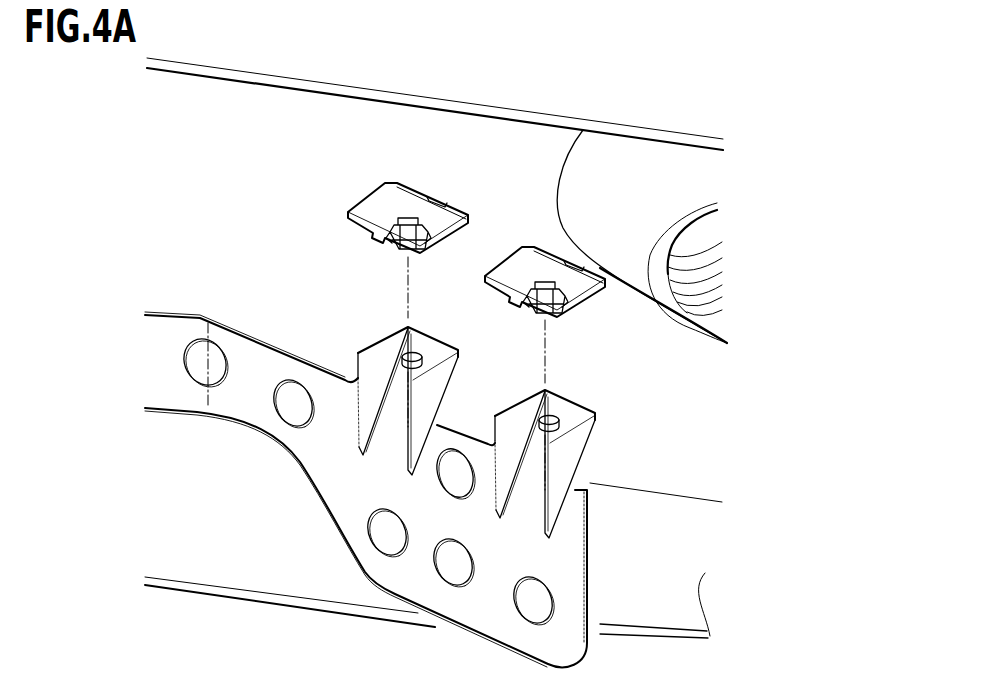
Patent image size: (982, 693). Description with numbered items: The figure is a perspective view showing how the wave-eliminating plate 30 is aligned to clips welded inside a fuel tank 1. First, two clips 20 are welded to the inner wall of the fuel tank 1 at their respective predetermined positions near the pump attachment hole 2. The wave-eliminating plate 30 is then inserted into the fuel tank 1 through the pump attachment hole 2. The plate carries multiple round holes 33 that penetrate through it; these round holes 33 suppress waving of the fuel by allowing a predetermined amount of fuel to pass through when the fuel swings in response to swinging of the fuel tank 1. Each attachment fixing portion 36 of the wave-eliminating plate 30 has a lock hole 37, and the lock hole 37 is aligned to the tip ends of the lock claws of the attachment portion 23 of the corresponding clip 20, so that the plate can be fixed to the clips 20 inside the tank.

The fuel tank 1 is at (273, 113).
The pump attachment hole 2 is at (697, 242).
The clip 20 is at (380, 197).
The attachment portion 23 is at (392, 232).
The wave-eliminating plate 30 is at (338, 472).
The round hole 33 is at (455, 490).
The attachment fixing portion 36 is at (372, 364).
The lock hole 37 is at (413, 367).